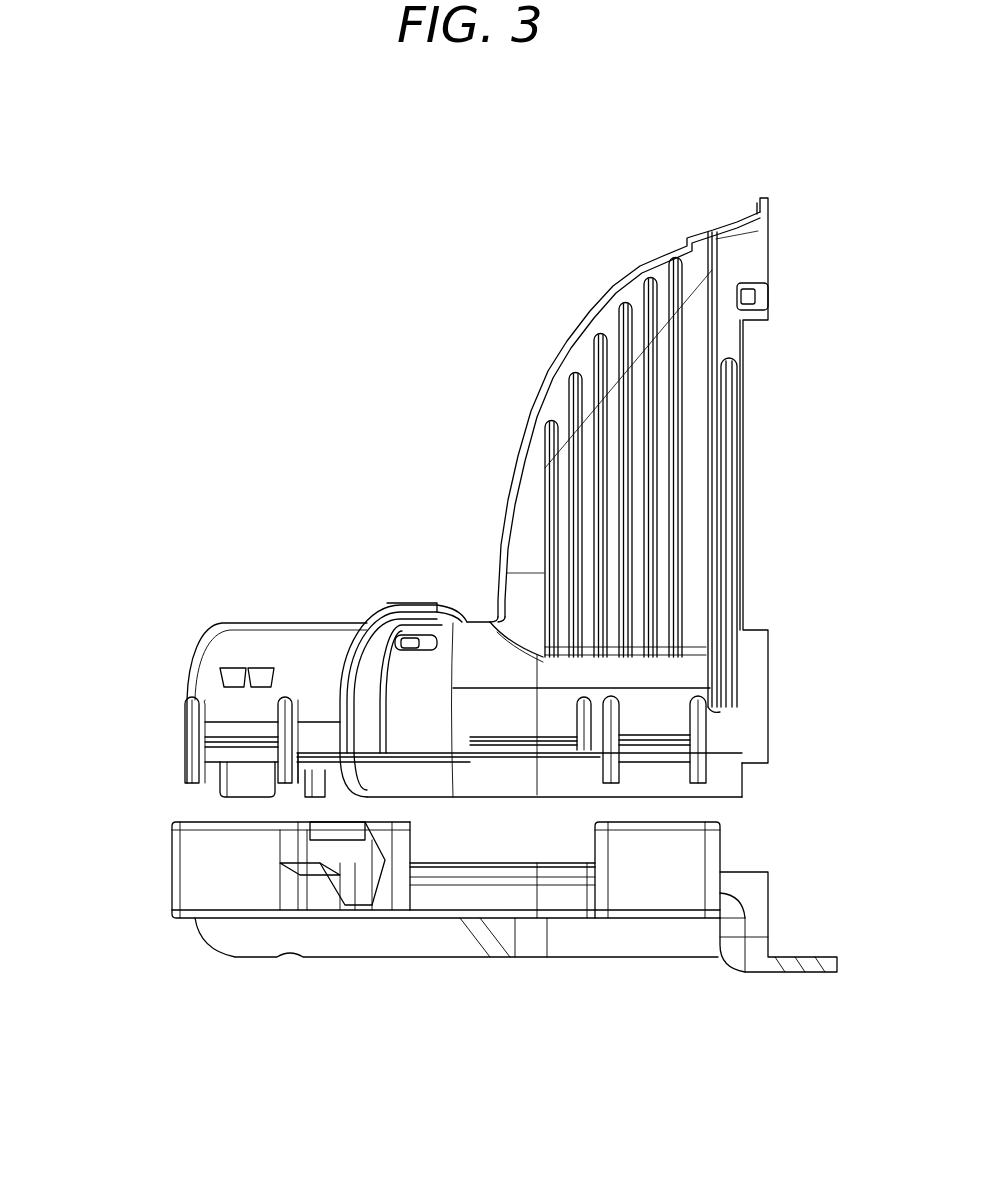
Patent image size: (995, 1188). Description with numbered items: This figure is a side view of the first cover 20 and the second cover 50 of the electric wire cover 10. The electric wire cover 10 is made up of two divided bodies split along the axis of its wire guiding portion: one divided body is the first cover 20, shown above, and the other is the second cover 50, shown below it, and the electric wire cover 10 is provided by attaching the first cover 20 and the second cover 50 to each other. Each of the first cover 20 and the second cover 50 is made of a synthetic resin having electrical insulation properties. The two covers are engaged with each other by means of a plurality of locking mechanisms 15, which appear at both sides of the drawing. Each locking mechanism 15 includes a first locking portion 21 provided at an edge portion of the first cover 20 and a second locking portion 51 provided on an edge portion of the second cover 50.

The electric wire cover 10 is at (343, 428).
The first cover 20 is at (527, 404).
The locking mechanism 15 is at (82, 732).
The first locking portion 21 is at (172, 749).
The second locking portion 51 is at (163, 852).
The second cover 50 is at (398, 966).